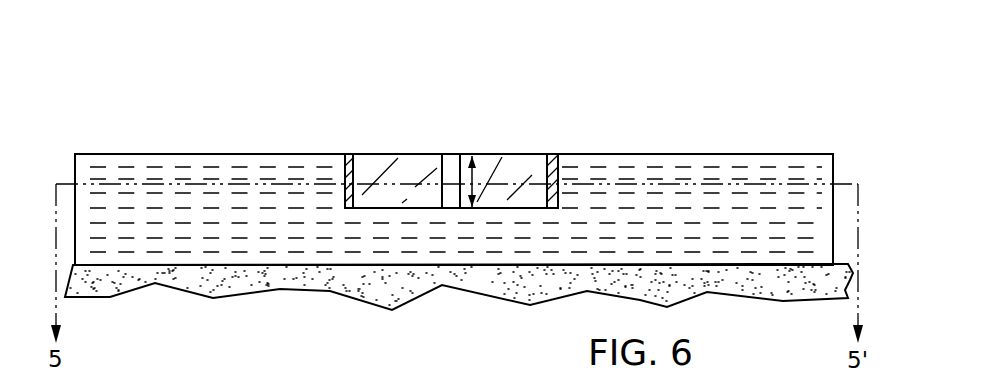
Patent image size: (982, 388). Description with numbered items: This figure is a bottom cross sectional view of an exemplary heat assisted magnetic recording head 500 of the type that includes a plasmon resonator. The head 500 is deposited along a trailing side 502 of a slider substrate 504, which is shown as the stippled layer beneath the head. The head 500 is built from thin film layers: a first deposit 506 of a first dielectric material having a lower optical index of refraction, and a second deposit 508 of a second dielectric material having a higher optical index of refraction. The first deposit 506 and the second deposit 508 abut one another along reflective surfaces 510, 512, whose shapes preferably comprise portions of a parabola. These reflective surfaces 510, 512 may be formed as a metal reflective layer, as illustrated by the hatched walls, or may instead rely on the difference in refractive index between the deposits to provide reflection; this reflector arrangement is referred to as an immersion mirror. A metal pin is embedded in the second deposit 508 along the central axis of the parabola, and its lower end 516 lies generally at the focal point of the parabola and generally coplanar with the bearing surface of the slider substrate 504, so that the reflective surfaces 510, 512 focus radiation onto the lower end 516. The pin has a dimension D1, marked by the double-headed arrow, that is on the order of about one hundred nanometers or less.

The heat assisted magnetic recording head 500 is at (710, 93).
The trailing side 502 is at (67, 283).
The slider substrate 504 is at (238, 283).
The first deposit 506 is at (213, 183).
The second deposit 508 is at (402, 172).
The reflective surface 510 is at (349, 165).
The reflective surface 512 is at (547, 173).
The lower end 516 is at (449, 167).
The dimension D1 is at (472, 155).